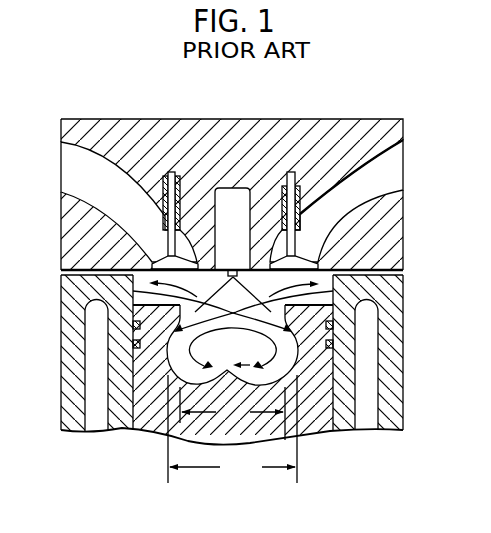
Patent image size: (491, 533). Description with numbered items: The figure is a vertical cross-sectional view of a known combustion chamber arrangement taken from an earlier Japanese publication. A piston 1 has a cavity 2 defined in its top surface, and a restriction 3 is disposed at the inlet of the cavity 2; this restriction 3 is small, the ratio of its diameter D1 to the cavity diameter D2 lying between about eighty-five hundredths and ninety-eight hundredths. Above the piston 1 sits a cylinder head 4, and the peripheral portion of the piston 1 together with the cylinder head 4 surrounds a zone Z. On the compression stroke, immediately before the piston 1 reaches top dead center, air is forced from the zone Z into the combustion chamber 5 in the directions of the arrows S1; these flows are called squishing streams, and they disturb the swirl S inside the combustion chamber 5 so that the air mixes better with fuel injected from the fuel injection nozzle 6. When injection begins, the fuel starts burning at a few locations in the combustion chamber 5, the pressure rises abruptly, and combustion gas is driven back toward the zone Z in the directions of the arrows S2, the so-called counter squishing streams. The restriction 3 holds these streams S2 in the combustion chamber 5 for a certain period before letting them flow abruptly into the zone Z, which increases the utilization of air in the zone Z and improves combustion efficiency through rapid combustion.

The piston 1 is at (155, 410).
The cavity 2 is at (208, 430).
The restriction 3 is at (284, 356).
The cylinder head 4 is at (232, 181).
The combustion chamber 5 is at (238, 354).
The fuel injection nozzle 6 is at (223, 212).
The swirl S is at (302, 380).
The squishing streams S1 is at (290, 277).
The counter squishing streams S2 is at (166, 276).
The zone Z is at (133, 297).
The restriction diameter D1 is at (232, 413).
The cavity diameter D2 is at (232, 430).